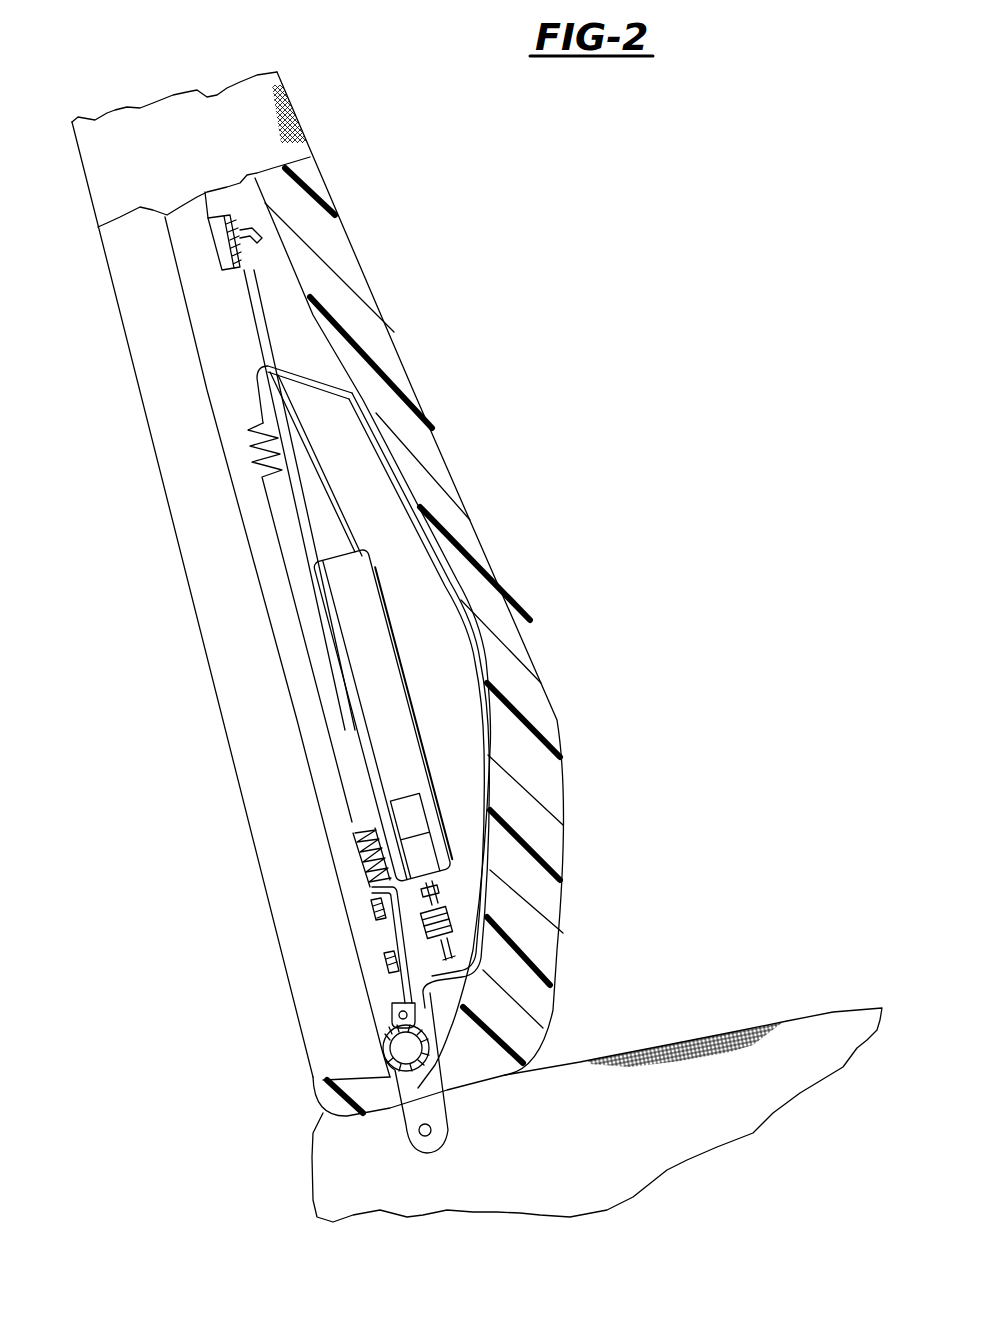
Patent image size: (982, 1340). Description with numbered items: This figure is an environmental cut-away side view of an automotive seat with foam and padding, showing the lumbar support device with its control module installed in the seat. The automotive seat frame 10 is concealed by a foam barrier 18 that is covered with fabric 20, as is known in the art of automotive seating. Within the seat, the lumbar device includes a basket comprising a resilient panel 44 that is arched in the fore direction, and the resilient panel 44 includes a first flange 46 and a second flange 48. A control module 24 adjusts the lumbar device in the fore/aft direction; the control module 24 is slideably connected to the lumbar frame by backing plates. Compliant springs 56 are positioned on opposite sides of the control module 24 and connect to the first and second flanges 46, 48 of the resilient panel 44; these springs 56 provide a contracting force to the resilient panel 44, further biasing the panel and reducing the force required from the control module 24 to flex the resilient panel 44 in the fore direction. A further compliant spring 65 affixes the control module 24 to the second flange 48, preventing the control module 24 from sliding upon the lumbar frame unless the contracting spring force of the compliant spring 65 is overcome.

The automotive seat frame 10 is at (297, 345).
The foam barrier 18 is at (306, 217).
The fabric 20 is at (393, 338).
The control module 24 is at (400, 667).
The resilient panel 44 is at (413, 487).
The first flange 46 is at (352, 388).
The second flange 48 is at (452, 962).
The compliant springs 56 is at (303, 635).
The compliant spring 65 is at (447, 912).